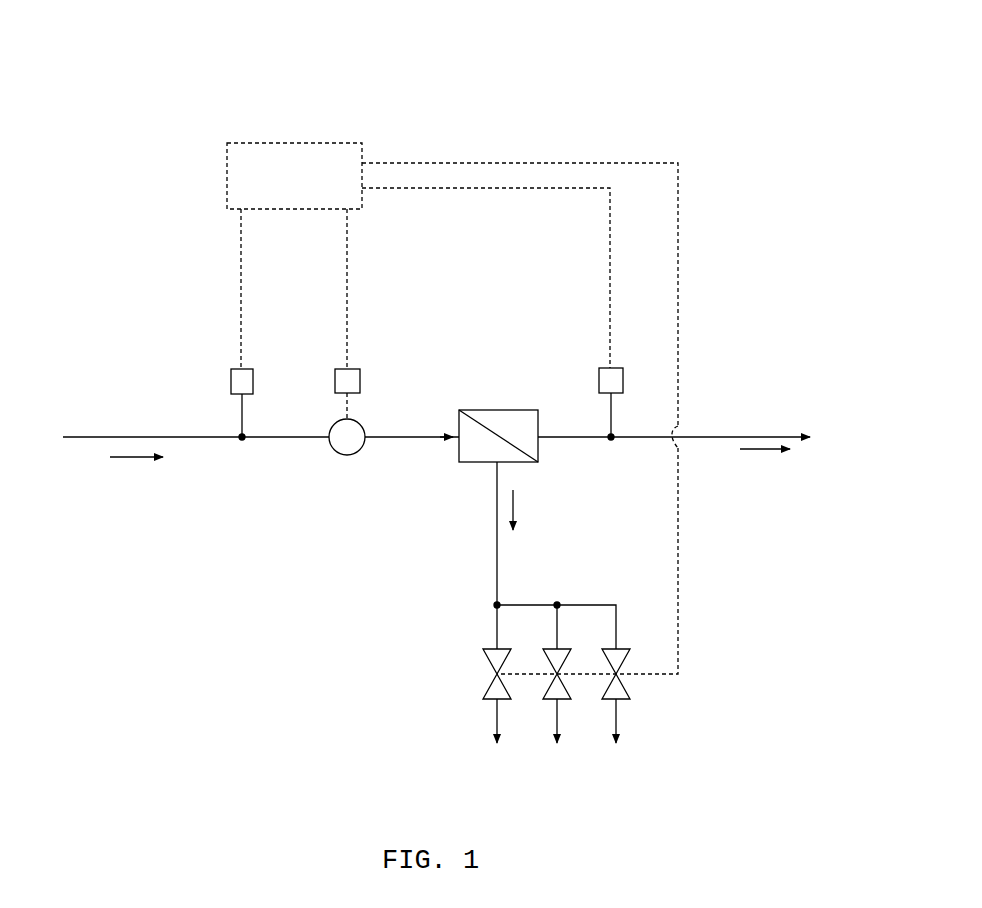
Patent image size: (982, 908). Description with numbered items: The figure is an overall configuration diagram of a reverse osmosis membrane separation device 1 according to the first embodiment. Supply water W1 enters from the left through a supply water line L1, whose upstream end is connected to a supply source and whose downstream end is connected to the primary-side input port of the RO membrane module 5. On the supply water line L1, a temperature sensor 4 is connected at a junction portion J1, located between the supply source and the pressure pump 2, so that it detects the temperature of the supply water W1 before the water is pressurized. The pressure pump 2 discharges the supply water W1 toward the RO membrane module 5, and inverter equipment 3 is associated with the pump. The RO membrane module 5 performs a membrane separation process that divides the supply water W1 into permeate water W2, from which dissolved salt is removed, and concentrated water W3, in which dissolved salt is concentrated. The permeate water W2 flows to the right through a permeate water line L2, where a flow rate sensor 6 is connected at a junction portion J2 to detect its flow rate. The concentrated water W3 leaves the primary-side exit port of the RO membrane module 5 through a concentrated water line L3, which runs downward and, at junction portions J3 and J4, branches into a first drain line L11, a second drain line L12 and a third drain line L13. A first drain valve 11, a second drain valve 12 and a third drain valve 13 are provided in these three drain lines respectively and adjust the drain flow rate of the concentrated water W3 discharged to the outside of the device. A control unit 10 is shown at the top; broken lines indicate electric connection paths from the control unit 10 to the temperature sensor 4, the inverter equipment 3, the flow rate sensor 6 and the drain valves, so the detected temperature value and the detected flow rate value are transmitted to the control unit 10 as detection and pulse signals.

The reverse osmosis membrane separation device 1 is at (539, 100).
The control unit 10 is at (352, 143).
The pressure pump 2 is at (360, 424).
The inverter equipment 3 is at (357, 369).
The temperature sensor 4 is at (252, 369).
The RO membrane module 5 is at (510, 410).
The flow rate sensor 6 is at (622, 368).
The first drain valve 11 is at (485, 699).
The second drain valve 12 is at (545, 699).
The third drain valve 13 is at (604, 699).
The junction portion J1 is at (244, 435).
The junction portion J2 is at (613, 436).
The junction portion J3 is at (497, 605).
The junction portion J4 is at (558, 605).
The supply water line L1 is at (291, 440).
The permeate water line L2 is at (746, 436).
The concentrated water line L3 is at (497, 533).
The first drain line L11 is at (497, 636).
The second drain line L12 is at (558, 635).
The third drain line L13 is at (617, 645).
The supply water W1 is at (136, 471).
The permeate water W2 is at (765, 467).
The concentrated water W3 is at (537, 510).